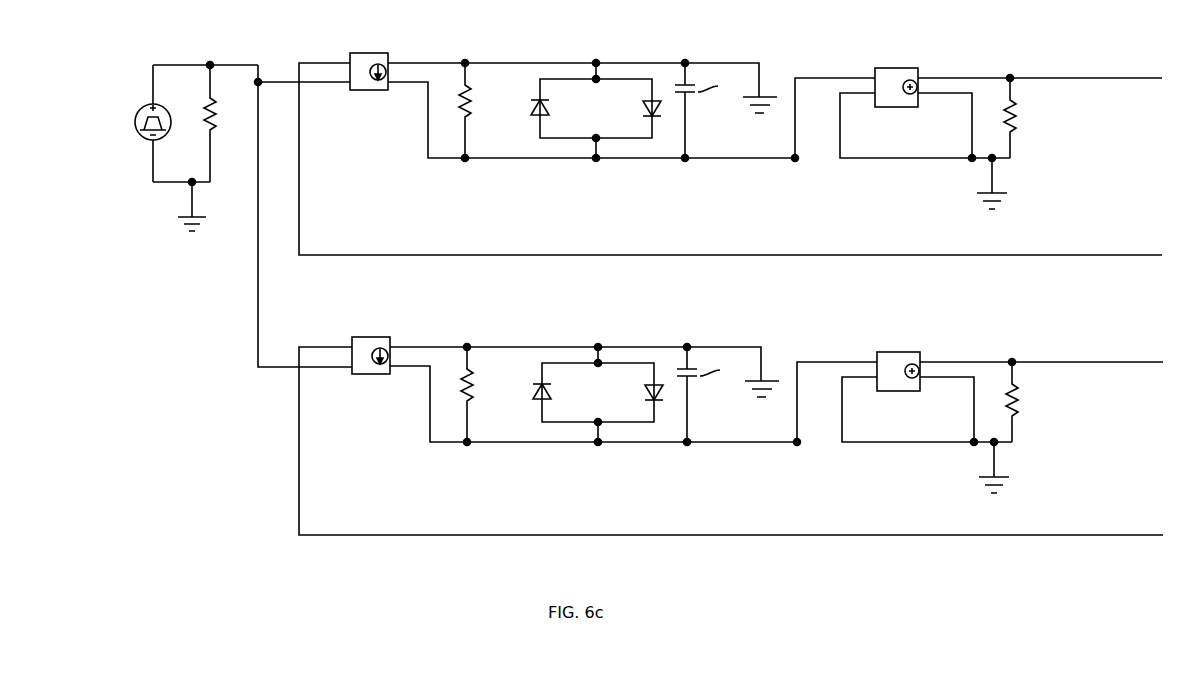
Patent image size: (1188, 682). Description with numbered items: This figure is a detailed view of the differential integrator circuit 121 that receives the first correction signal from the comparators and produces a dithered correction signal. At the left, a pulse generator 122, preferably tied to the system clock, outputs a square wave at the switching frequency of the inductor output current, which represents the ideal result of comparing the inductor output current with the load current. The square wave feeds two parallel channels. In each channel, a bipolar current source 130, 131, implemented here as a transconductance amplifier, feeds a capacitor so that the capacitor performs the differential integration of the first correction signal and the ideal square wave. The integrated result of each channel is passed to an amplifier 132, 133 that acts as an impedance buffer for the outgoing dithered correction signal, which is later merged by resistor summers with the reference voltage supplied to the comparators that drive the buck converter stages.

The differential integrator circuit 121 is at (104, 178).
The pulse generator 122 is at (153, 79).
The bipolar current source 130 is at (385, 52).
The bipolar current source 131 is at (397, 350).
The amplifier 132 is at (910, 68).
The amplifier 133 is at (924, 364).